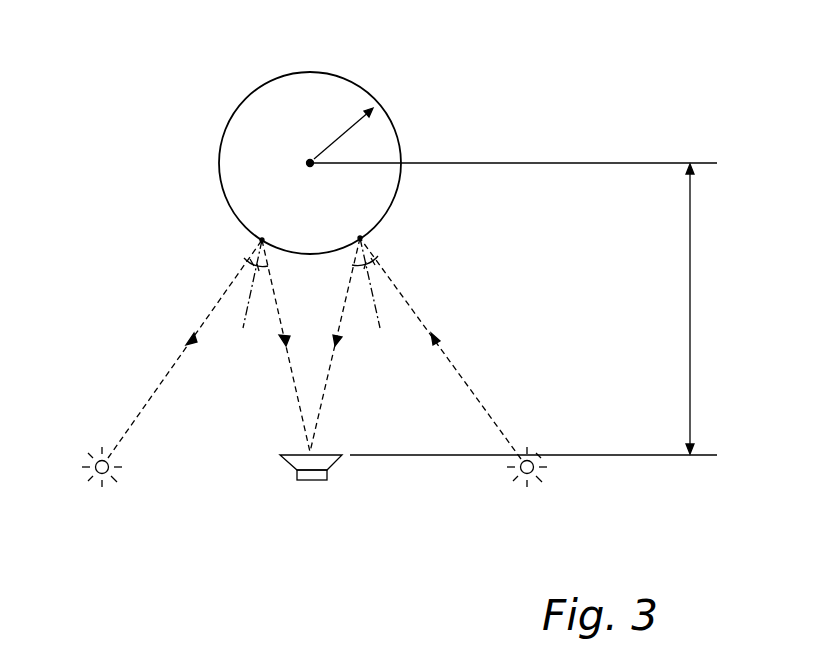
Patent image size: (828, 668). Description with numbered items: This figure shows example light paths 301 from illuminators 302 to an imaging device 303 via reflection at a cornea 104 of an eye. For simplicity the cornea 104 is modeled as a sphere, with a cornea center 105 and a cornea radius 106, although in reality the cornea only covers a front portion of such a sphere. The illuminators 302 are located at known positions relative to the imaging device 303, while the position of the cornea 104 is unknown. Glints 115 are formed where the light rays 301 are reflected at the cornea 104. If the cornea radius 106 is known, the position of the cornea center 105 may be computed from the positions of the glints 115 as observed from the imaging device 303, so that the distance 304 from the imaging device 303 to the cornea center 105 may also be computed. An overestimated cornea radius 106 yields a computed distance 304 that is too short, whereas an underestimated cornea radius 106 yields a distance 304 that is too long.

The cornea 104 is at (233, 117).
The cornea center 105 is at (310, 163).
The cornea radius 106 is at (329, 137).
The glints 115 is at (262, 240).
The light paths 301 is at (160, 383).
The illuminators 302 is at (100, 476).
The imaging device 303 is at (300, 480).
The distance 304 is at (690, 311).